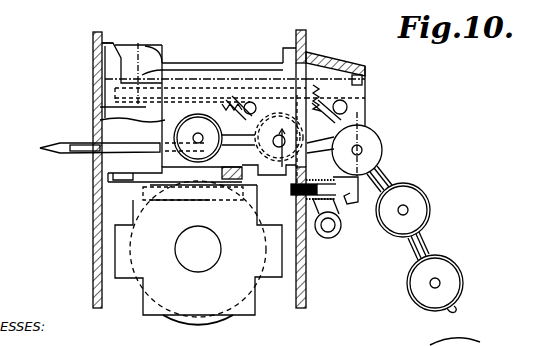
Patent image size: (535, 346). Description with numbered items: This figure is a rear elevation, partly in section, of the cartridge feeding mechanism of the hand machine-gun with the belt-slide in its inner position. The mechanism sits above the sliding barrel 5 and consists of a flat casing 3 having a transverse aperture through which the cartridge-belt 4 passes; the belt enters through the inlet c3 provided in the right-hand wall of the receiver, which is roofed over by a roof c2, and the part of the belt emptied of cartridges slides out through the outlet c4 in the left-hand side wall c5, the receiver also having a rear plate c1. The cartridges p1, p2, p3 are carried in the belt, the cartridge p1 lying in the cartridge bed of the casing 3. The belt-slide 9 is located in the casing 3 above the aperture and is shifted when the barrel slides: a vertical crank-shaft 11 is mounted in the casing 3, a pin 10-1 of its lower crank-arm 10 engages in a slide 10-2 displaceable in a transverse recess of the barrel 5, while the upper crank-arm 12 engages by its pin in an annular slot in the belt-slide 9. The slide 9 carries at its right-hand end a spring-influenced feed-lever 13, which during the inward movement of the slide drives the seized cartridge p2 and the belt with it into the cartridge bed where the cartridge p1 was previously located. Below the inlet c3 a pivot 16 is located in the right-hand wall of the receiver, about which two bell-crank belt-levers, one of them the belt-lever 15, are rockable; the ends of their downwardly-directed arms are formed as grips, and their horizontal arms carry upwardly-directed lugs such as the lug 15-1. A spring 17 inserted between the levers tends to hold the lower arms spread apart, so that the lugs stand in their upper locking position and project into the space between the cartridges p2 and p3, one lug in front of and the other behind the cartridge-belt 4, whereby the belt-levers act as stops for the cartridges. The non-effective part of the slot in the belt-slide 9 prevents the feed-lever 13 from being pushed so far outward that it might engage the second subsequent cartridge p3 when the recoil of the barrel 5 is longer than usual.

The flat casing 3 is at (100, 104).
The cartridge-belt 4 is at (392, 182).
The sliding barrel 5 is at (198, 253).
The belt-slide 9 is at (187, 104).
The lower crank-arm 10 is at (148, 175).
The pin of lower crank-arm 10-1 is at (250, 197).
The slide 10-2 is at (160, 210).
The vertical crank-shaft 11 is at (120, 47).
The upper crank-arm 12 is at (163, 58).
The feed-lever 13 is at (230, 106).
The belt-lever 15 is at (336, 234).
The lug of belt-lever 15-1 is at (370, 160).
The pivot 16 is at (292, 190).
The spring 17 is at (328, 239).
The cartridge p1 is at (100, 117).
The cartridge p2 is at (268, 122).
The cartridge p3 is at (374, 143).
The rear plate c1 is at (256, 279).
The roof c2 is at (348, 62).
The inlet c3 is at (349, 110).
The outlet c4 is at (90, 138).
The left-hand side wall c5 is at (98, 253).